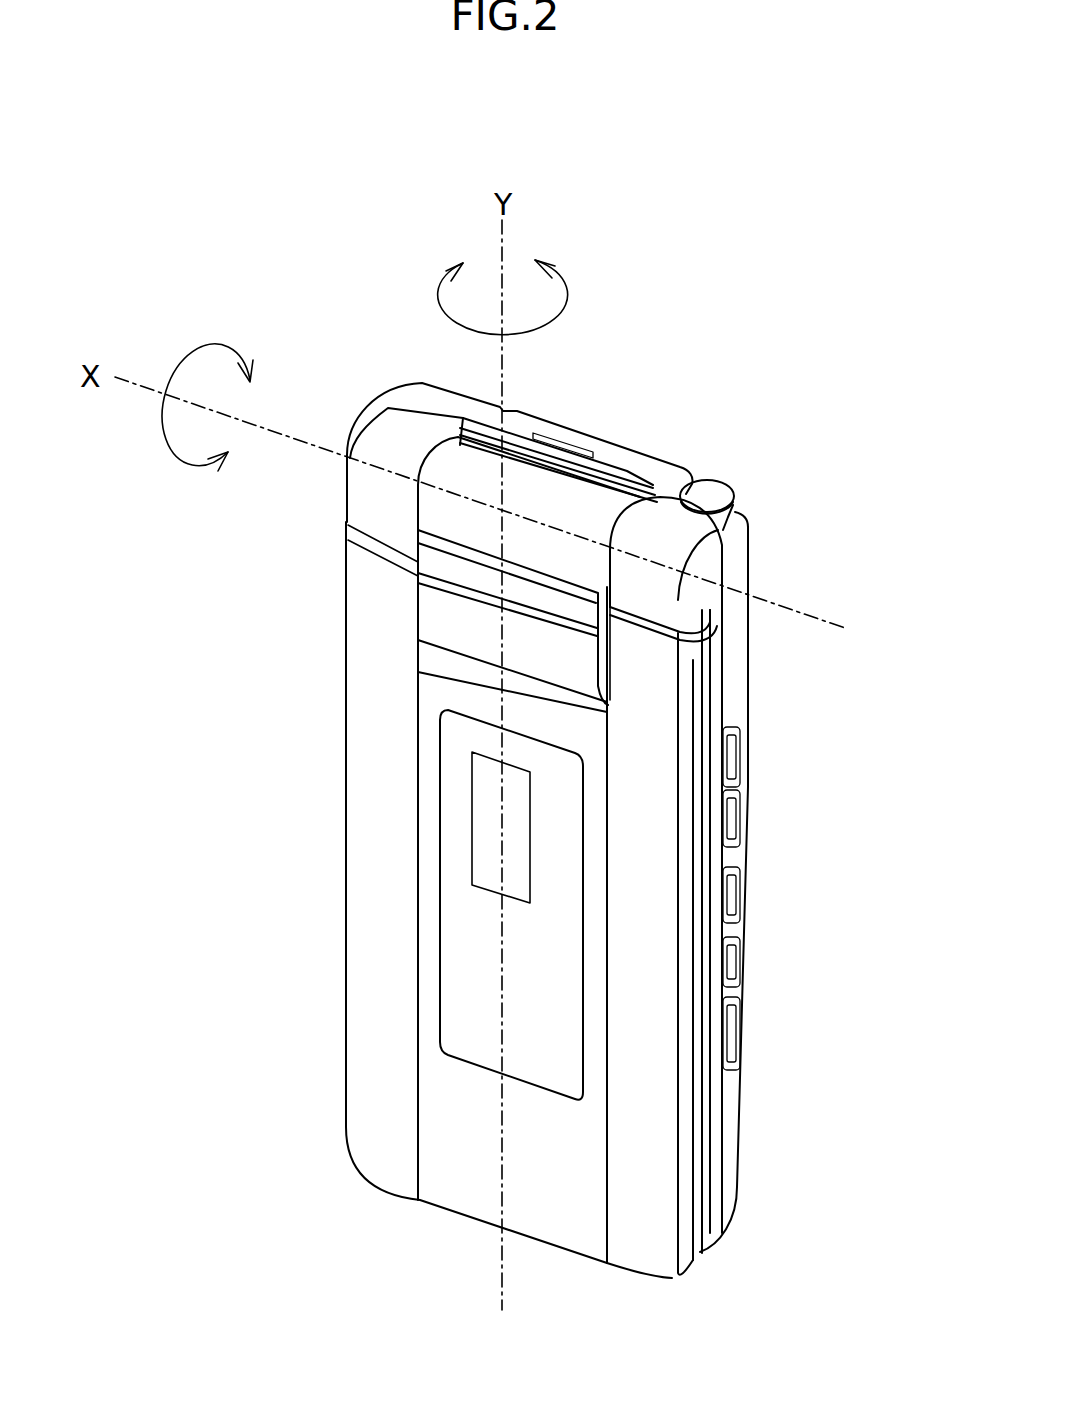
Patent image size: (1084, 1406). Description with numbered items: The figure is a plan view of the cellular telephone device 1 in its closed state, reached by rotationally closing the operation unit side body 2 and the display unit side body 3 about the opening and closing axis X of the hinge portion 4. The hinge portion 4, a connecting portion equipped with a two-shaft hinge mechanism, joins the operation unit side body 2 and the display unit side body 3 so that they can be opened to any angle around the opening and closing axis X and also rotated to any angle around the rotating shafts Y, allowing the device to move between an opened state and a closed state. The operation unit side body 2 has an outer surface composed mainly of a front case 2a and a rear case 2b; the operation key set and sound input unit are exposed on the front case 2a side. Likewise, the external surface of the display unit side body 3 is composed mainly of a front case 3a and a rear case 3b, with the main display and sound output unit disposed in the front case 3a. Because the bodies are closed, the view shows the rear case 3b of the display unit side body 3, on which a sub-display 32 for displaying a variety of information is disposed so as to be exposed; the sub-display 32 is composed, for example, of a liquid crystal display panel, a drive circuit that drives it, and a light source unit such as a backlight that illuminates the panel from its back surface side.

The cellular telephone device 1 is at (633, 376).
The operation unit side body 2 is at (790, 795).
The front case 2a is at (722, 688).
The rear case 2b is at (727, 1092).
The display unit side body 3 is at (326, 712).
The front case 3a is at (693, 1158).
The rear case 3b is at (370, 1000).
The sub-display 32 is at (458, 898).
The hinge portion 4 is at (425, 505).